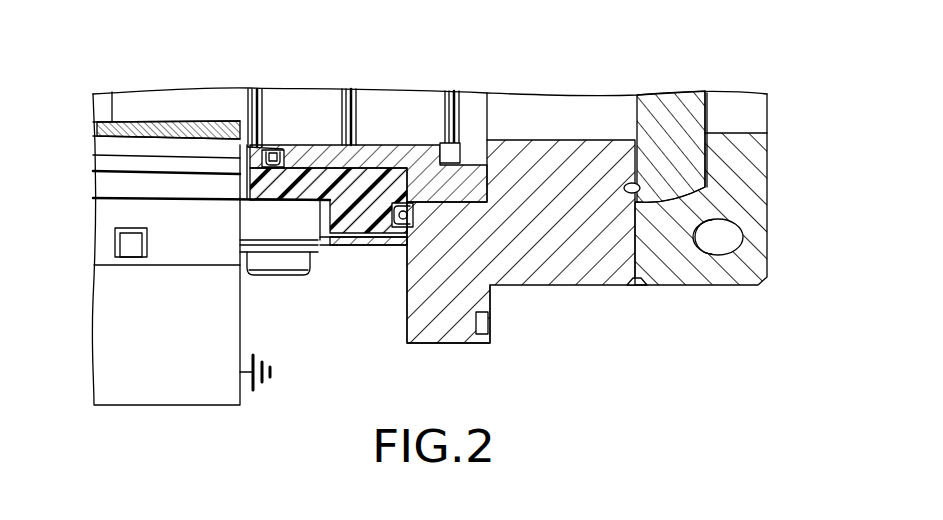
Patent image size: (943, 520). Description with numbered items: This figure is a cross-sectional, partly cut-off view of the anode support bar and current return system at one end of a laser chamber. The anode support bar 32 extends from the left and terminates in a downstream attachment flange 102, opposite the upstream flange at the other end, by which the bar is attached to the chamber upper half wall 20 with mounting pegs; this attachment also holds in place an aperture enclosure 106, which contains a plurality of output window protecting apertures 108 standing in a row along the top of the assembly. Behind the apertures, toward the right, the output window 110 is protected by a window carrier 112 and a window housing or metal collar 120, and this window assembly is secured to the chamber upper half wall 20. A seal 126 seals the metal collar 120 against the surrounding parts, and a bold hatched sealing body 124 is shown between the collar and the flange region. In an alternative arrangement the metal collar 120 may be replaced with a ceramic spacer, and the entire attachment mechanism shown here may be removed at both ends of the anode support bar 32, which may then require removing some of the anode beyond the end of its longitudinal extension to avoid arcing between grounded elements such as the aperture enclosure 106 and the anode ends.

The upper chamber wall 20 is at (555, 270).
The anode support bar 32 is at (140, 368).
The downstream attachment flange 102 is at (297, 228).
The aperture enclosure 106 is at (444, 218).
The output window protecting apertures 108 is at (450, 101).
The output window 110 is at (657, 110).
The window carrier 112 is at (682, 270).
The metal collar 120 is at (357, 215).
The sealing body 124 is at (298, 188).
The seal 126 is at (408, 207).